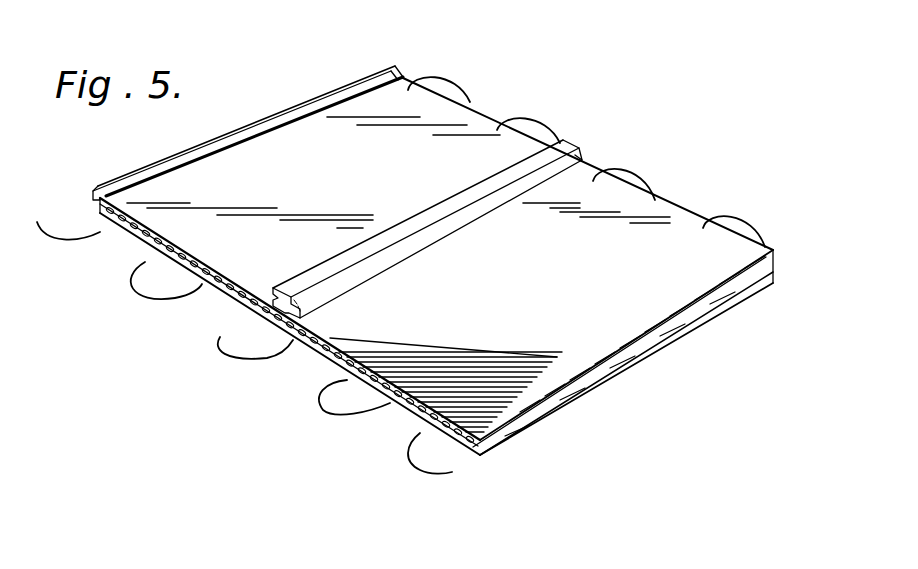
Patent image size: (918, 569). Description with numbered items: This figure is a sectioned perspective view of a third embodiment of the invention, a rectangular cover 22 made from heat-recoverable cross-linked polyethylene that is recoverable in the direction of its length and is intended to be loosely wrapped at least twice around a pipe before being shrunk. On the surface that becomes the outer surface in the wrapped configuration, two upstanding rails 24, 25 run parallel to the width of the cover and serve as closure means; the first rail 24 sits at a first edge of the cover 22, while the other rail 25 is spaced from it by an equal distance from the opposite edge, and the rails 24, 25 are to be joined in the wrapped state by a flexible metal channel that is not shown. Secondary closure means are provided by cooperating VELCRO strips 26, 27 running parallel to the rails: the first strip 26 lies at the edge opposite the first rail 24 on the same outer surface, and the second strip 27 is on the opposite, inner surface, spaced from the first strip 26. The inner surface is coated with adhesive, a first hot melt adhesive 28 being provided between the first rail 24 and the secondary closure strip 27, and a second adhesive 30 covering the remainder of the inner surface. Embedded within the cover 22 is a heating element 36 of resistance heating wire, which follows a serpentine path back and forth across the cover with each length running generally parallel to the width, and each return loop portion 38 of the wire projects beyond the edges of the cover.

The cover 22 is at (680, 210).
The first rail 24 is at (397, 70).
The second rail 25 is at (569, 142).
The first VELCRO strip 26 is at (774, 250).
The second VELCRO strip 27 is at (332, 385).
The first hot melt adhesive 28 is at (213, 300).
The second adhesive 30 is at (427, 418).
The heating element 36 is at (98, 236).
The return loop portion 38 is at (467, 93).